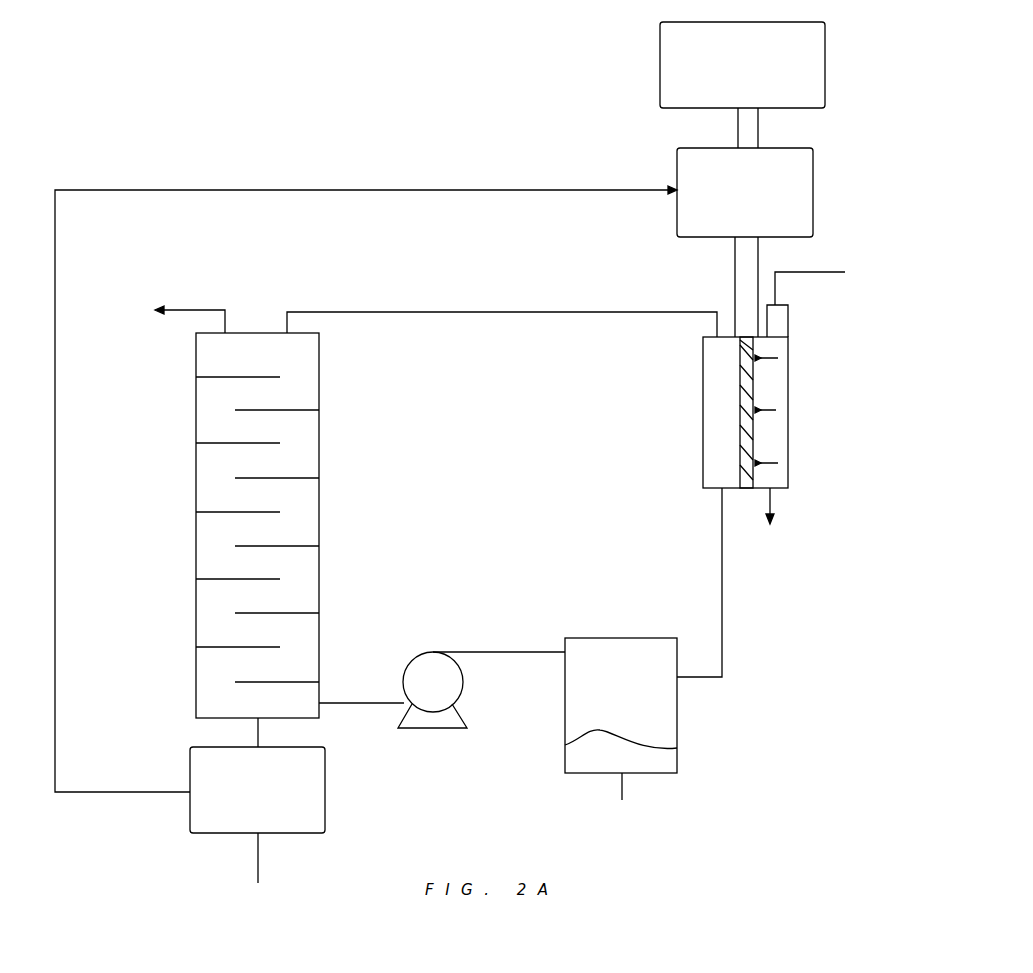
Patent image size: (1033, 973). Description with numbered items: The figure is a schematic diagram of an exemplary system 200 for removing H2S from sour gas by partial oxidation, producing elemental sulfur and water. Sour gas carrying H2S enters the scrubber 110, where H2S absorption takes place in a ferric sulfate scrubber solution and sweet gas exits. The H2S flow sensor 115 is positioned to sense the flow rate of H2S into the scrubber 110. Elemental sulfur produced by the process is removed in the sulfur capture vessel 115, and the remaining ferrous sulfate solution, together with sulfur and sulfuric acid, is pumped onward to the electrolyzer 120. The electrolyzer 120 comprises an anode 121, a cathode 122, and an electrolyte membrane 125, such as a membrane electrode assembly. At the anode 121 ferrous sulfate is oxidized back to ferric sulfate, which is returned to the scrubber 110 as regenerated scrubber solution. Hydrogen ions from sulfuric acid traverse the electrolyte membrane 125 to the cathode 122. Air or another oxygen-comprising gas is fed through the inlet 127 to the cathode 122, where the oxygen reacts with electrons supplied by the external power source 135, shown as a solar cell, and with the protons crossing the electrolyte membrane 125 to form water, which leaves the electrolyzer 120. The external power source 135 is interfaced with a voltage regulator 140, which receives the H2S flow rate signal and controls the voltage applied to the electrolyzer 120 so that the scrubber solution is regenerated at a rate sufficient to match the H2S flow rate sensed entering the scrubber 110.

The system 200 is at (184, 123).
The external power source 135 is at (660, 60).
The voltage regulator 140 is at (728, 223).
The electrolyzer 120 is at (681, 429).
The anode 121 is at (703, 352).
The cathode 122 is at (793, 358).
The electrolyte membrane 125 is at (746, 490).
The inlet 127 is at (826, 300).
The scrubber 110 is at (320, 520).
The sulfur capture vessel / H2S flow sensor 115 is at (677, 722).